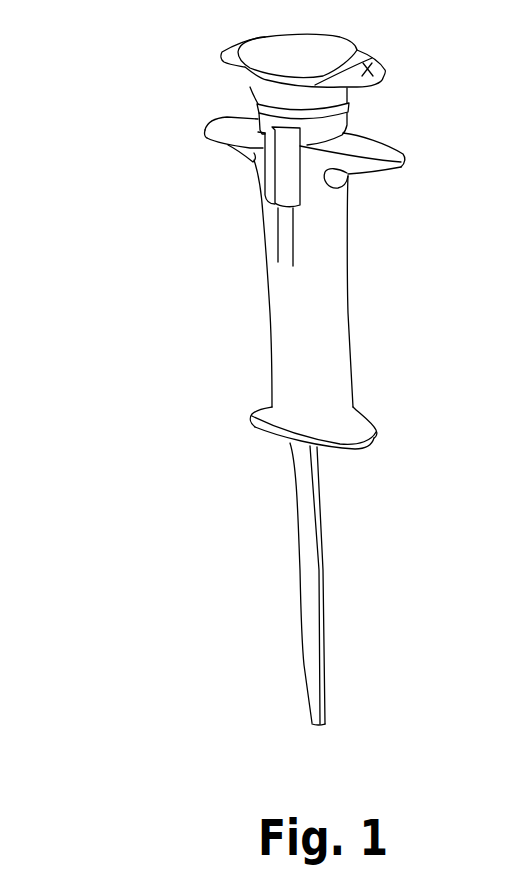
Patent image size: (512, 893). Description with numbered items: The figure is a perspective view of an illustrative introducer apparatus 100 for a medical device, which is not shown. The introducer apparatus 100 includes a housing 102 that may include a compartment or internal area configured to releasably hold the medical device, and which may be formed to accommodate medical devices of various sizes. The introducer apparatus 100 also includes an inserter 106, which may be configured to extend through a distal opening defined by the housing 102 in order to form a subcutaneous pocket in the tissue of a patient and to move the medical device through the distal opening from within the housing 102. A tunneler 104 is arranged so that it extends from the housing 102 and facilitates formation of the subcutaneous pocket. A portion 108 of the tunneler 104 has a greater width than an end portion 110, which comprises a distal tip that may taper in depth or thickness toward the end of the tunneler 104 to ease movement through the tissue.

The introducer apparatus 100 is at (131, 152).
The housing 102 is at (338, 307).
The tunneler 104 is at (315, 726).
The inserter 106 is at (362, 64).
The portion of the tunneler 108 is at (278, 698).
The end portion of the tunneler 110 is at (278, 722).